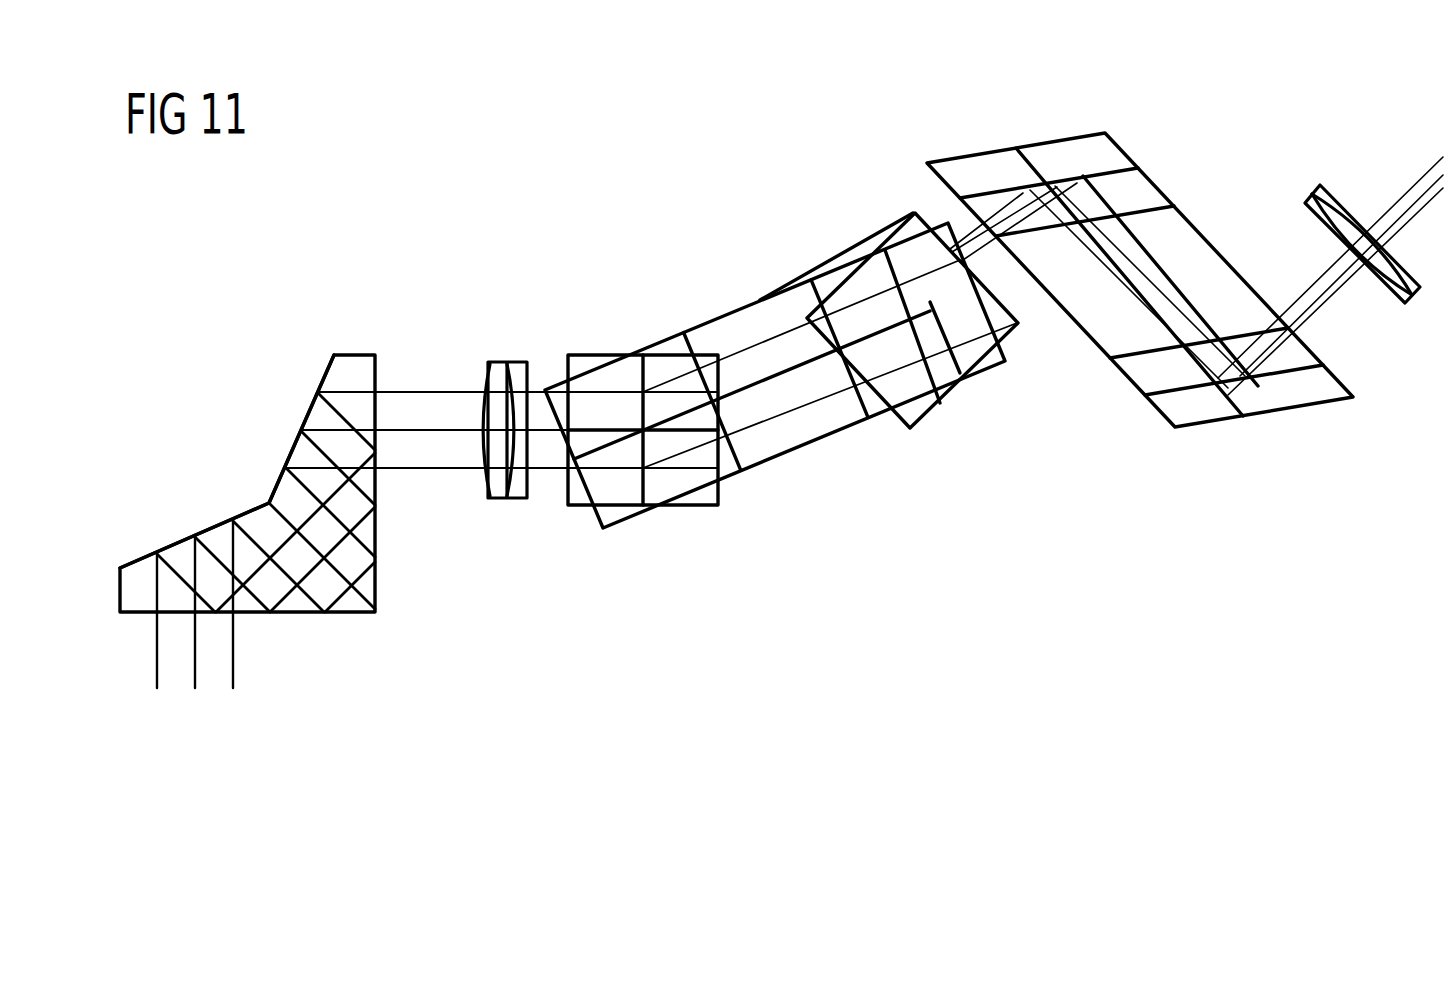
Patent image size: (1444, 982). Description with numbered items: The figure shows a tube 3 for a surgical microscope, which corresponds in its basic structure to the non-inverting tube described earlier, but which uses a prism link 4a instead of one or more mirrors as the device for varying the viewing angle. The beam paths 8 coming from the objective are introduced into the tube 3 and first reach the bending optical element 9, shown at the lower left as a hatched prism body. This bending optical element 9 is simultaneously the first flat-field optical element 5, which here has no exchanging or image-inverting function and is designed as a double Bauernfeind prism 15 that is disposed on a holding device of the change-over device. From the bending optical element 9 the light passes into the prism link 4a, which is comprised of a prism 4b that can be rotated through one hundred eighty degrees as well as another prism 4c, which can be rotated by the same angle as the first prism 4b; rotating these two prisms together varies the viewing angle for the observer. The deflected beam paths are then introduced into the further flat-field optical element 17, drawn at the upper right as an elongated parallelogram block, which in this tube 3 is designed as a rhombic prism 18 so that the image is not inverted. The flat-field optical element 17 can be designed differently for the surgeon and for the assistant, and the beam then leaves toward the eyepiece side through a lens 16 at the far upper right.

The tube 3 is at (540, 226).
The prism link 4a is at (823, 457).
The prism that can be rotated 180° 4b is at (747, 320).
The prism 4c is at (908, 228).
The first flat-field optical element 5 is at (300, 452).
The beam paths 8 is at (195, 688).
The bending optical element 9 is at (218, 540).
The double Bauernfeind prism 15 is at (372, 580).
The lens 16 is at (1317, 200).
The flat-field optical element 17 is at (1140, 323).
The rhombic prism 18 is at (1227, 408).